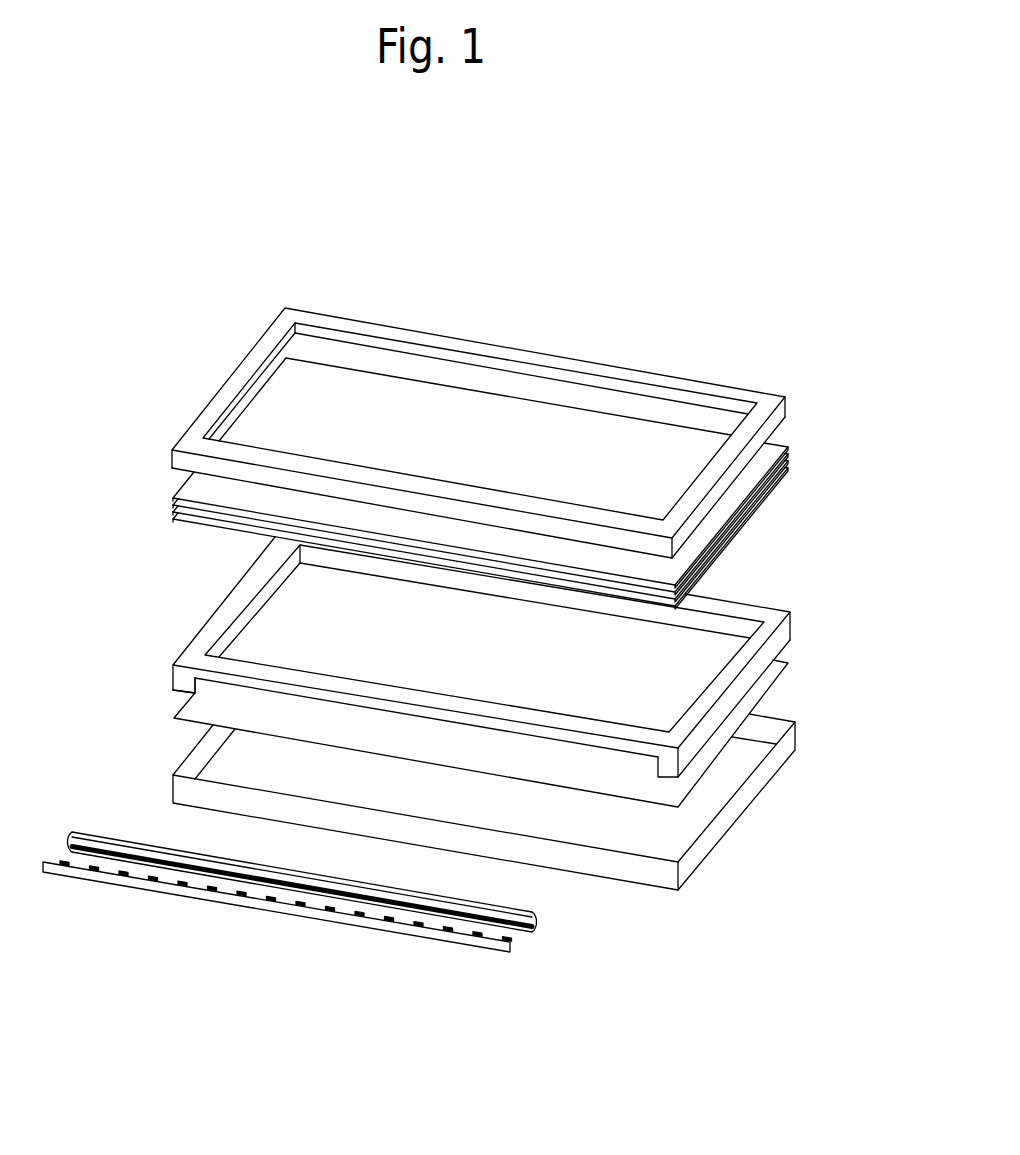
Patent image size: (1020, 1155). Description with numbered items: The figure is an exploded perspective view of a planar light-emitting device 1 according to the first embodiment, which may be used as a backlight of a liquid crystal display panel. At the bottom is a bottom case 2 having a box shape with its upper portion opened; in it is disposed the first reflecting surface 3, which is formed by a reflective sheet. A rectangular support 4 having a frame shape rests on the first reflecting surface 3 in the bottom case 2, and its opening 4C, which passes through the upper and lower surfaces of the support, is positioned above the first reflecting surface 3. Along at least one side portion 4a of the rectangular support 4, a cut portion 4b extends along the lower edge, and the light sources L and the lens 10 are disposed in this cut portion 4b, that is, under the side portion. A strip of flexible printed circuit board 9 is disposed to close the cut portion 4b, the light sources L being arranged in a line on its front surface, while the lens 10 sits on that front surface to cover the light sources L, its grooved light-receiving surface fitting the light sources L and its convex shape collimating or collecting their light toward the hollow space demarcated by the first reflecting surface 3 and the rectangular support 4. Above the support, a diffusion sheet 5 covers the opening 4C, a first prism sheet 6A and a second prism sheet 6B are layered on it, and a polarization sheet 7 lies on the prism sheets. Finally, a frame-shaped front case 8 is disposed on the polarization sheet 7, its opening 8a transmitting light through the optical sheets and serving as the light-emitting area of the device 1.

The planar light-emitting device 1 is at (597, 284).
The bottom case 2 is at (710, 852).
The first reflecting surface 3 is at (718, 758).
The rectangular support 4 is at (758, 600).
The side portion 4a is at (390, 695).
The cut portion 4b is at (207, 680).
The opening 4C is at (682, 682).
The diffusion sheet 5 is at (173, 519).
The first prism sheet 6A is at (173, 512).
The second prism sheet 6B is at (173, 505).
The polarization sheet 7 is at (173, 498).
The front case 8 is at (638, 368).
The opening 8a is at (450, 398).
The circuit board 9 is at (322, 918).
The lens 10 is at (537, 912).
The light sources L is at (442, 923).